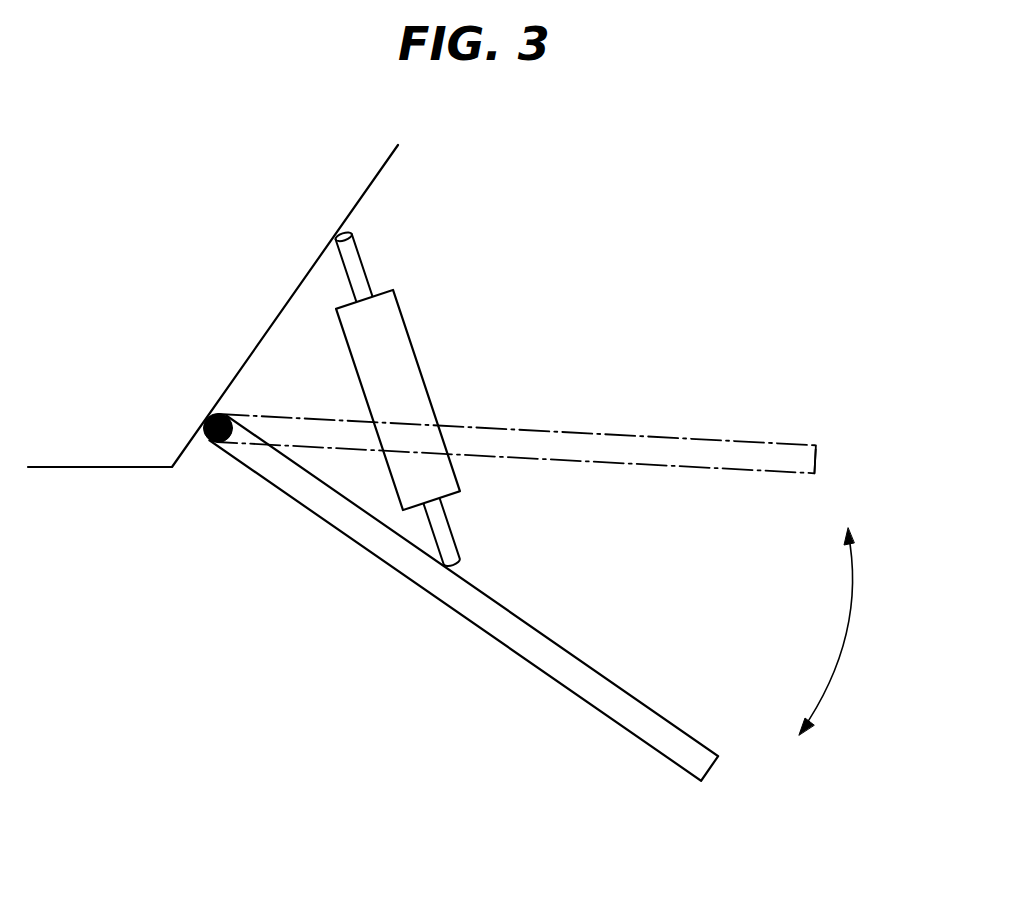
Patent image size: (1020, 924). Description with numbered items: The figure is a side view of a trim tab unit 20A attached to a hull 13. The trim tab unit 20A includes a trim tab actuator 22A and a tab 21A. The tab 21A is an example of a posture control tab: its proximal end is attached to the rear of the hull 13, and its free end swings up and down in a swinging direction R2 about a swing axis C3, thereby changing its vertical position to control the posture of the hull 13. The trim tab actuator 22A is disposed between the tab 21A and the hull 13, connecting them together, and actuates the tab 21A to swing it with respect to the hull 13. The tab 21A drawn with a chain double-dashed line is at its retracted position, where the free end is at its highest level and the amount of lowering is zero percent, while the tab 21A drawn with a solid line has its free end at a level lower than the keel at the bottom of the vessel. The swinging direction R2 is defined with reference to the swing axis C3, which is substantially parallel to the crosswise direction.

The hull 13 is at (382, 168).
The trim tab unit 20A is at (663, 318).
The tab 21A is at (736, 440).
The trim tab actuator 22A is at (415, 353).
The swing axis C3 is at (206, 443).
The swinging direction R2 is at (849, 631).